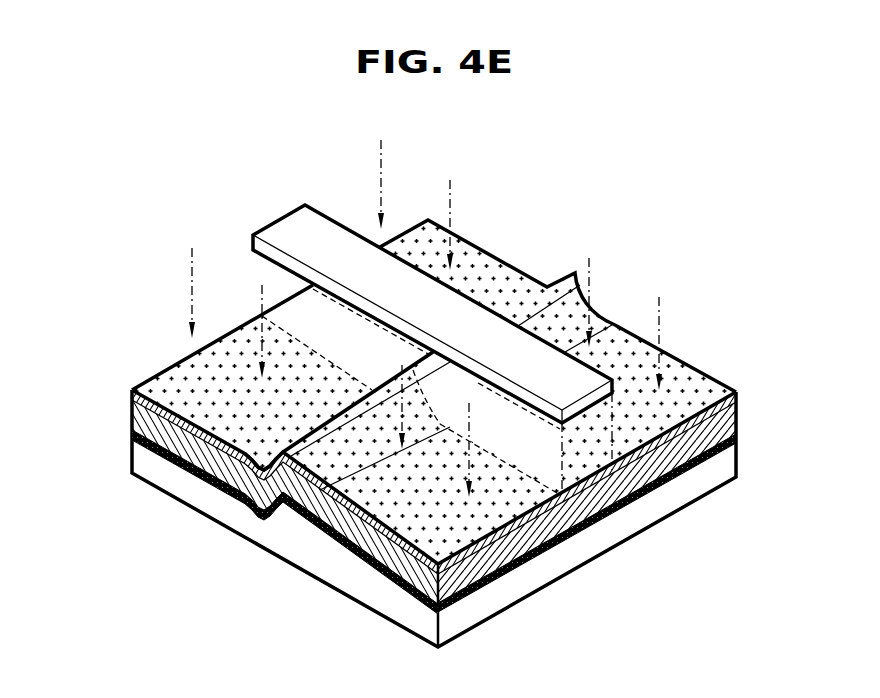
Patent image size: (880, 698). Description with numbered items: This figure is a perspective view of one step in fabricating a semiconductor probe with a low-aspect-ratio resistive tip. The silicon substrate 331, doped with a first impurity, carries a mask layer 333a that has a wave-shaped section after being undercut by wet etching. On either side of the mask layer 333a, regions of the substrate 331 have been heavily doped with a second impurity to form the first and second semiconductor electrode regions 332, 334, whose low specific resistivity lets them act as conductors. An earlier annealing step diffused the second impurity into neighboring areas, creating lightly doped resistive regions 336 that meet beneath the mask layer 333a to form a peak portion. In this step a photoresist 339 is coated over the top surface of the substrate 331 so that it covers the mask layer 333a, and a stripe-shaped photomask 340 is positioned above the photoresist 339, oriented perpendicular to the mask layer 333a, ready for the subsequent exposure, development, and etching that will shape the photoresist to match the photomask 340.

The silicon substrate 331 is at (736, 447).
The first semiconductor electrode region 332 is at (132, 410).
The mask layer 333a is at (247, 485).
The second semiconductor electrode region 334 is at (407, 594).
The resistive regions 336 is at (287, 498).
The photoresist 339 is at (132, 390).
The stripe-shaped photomask 340 is at (290, 226).